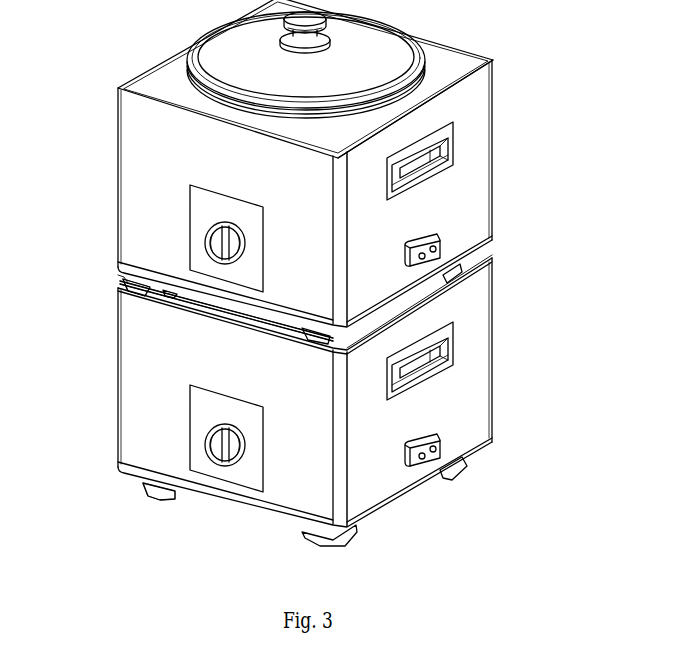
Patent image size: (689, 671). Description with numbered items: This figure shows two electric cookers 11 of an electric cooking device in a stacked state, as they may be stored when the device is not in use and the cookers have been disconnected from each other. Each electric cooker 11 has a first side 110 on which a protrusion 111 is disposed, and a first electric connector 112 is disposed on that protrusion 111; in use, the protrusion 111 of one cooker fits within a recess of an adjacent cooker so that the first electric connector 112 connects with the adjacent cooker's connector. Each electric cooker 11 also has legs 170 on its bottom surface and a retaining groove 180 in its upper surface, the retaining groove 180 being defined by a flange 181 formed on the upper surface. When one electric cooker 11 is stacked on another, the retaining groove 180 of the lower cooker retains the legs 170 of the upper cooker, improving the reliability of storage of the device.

The electric cooker 11 is at (113, 180).
The first side 110 is at (470, 133).
The protrusion 111 is at (428, 237).
The first electric connector 112 is at (440, 250).
The leg 170 is at (143, 295).
The retaining groove 180 is at (208, 305).
The flange 181 is at (122, 283).